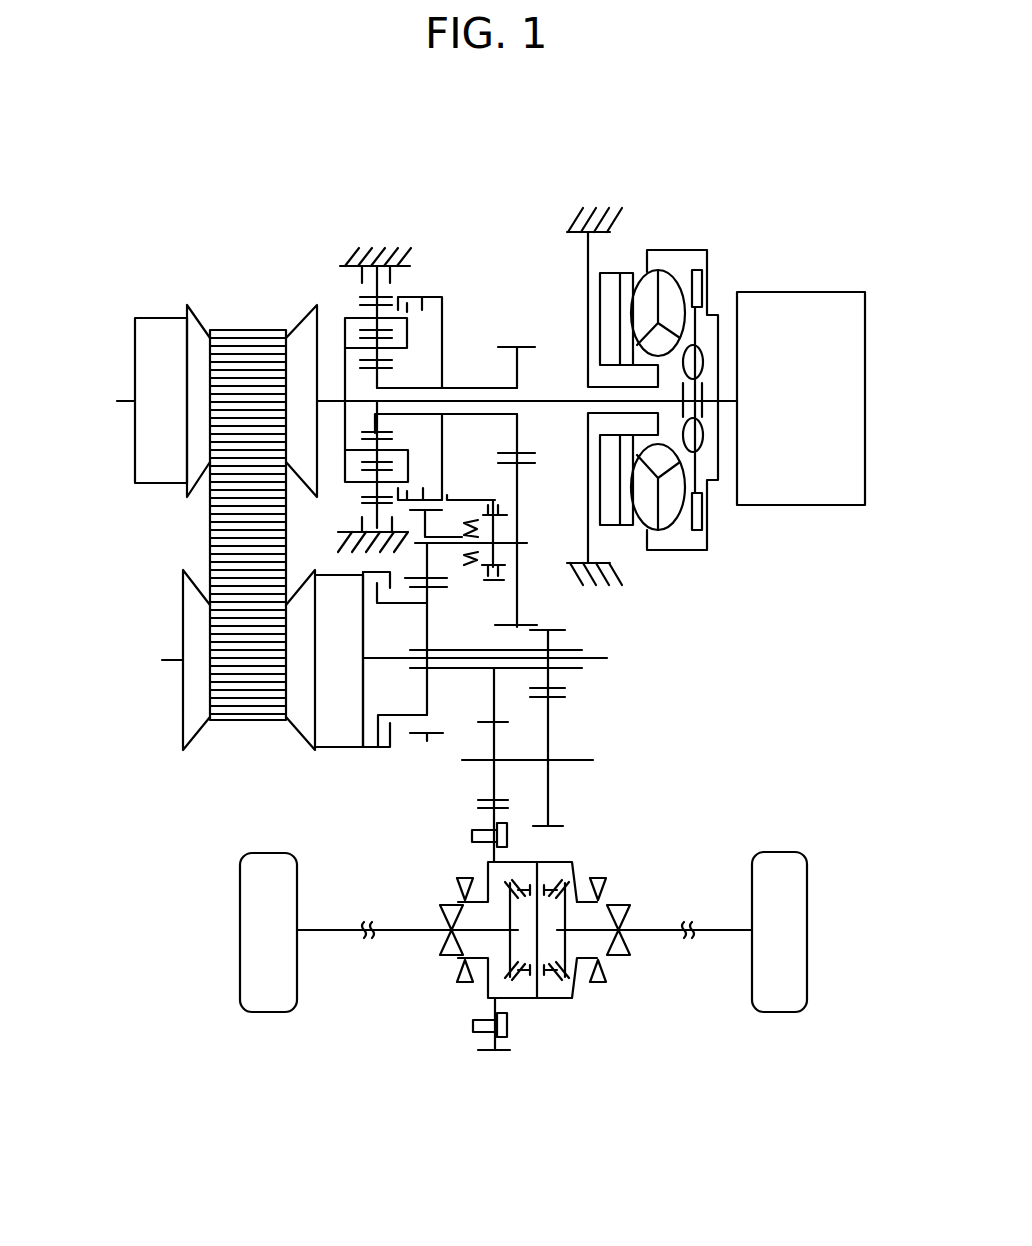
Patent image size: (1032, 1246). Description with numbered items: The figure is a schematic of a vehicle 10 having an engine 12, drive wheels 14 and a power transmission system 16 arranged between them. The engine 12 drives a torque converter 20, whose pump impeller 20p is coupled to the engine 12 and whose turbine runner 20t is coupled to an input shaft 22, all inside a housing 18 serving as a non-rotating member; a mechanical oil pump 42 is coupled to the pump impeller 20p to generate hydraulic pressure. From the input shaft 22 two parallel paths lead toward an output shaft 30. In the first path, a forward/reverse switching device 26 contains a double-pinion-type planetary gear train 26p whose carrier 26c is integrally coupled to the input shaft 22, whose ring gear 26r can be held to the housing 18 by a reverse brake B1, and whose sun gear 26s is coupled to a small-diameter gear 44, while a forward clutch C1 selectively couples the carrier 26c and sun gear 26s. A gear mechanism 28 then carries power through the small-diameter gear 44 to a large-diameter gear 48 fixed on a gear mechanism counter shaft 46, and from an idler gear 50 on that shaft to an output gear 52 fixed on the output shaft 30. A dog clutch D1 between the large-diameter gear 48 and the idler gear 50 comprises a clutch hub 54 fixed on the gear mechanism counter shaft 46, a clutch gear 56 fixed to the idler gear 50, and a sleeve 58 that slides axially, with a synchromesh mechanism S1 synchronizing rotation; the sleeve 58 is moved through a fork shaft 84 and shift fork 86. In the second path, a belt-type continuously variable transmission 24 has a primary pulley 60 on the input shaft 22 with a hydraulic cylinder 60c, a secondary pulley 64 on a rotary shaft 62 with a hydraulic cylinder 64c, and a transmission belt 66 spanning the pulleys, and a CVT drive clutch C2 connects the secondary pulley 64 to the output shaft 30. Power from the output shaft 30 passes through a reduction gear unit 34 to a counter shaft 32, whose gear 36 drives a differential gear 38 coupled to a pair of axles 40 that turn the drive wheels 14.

The vehicle 10 is at (766, 162).
The engine 12 is at (790, 302).
The drive wheels 14 is at (270, 862).
The power transmission system 16 is at (660, 200).
The housing 18 is at (373, 258).
The torque converter 20 is at (666, 226).
The pump impeller 20p is at (643, 282).
The turbine runner 20t is at (668, 284).
The input shaft 22 is at (533, 398).
The belt-type continuously variable transmission 24 is at (222, 282).
The forward/reverse switching device 26 is at (432, 262).
The ring gear 26r is at (360, 298).
The sun gear 26s is at (385, 437).
The carrier 26c is at (408, 347).
The double-pinion-type planetary gear train 26p is at (365, 506).
The gear mechanism 28 is at (488, 310).
The output shaft 30 is at (466, 670).
The counter shaft 32 is at (575, 760).
The reduction gear unit 34 is at (596, 688).
The gear 36 is at (492, 720).
The differential gear 38 is at (537, 1012).
The axles 40 is at (395, 928).
The mechanical oil pump 42 is at (612, 280).
The small-diameter gear 44 is at (520, 345).
The gear mechanism counter shaft 46 is at (527, 540).
The large-diameter gear 48 is at (512, 630).
The idler gear 50 is at (412, 582).
The output gear 52 is at (418, 737).
The clutch hub 54 is at (500, 575).
The clutch gear 56 is at (480, 567).
The sleeve 58 is at (485, 595).
The primary pulley 60 is at (122, 357).
The hydraulic cylinder of the primary pulley 60c is at (160, 480).
The rotary shaft 62 is at (170, 661).
The secondary pulley 64 is at (178, 630).
The hydraulic cylinder of the secondary pulley 64c is at (338, 747).
The transmission belt 66 is at (247, 722).
The fork shaft 84 is at (438, 526).
The shift fork 86 is at (497, 500).
The reverse brake B1 is at (362, 285).
The forward clutch C1 is at (419, 334).
The CVT drive clutch C2 is at (394, 675).
The dog clutch D1 is at (479, 497).
The synchromesh mechanism S1 is at (468, 512).